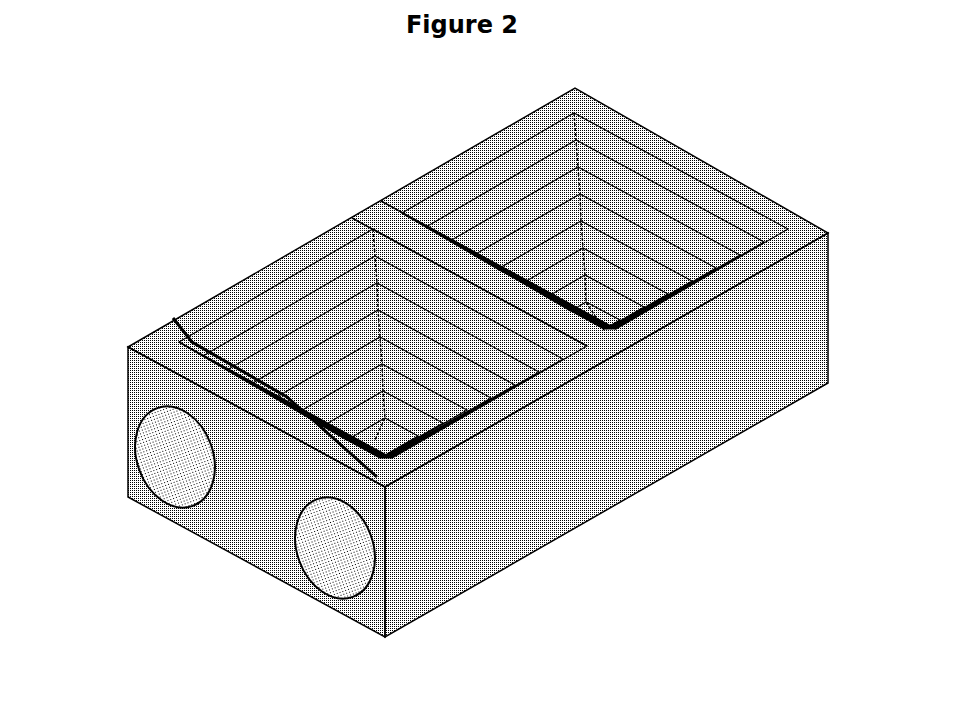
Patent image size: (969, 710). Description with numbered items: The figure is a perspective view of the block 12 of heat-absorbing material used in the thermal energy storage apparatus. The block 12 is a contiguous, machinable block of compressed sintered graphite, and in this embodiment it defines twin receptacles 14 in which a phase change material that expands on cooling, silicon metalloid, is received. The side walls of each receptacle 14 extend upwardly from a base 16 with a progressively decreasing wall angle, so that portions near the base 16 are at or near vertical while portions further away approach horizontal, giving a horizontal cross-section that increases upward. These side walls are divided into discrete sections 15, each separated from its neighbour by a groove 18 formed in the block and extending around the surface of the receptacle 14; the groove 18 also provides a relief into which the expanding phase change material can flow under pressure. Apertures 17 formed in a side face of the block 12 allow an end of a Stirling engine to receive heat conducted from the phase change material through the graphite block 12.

The block 12 is at (462, 346).
The receptacle 14 is at (471, 326).
The discrete sections 15 is at (195, 316).
The base 16 is at (375, 440).
The apertures 17 is at (174, 462).
The groove 18 is at (277, 290).